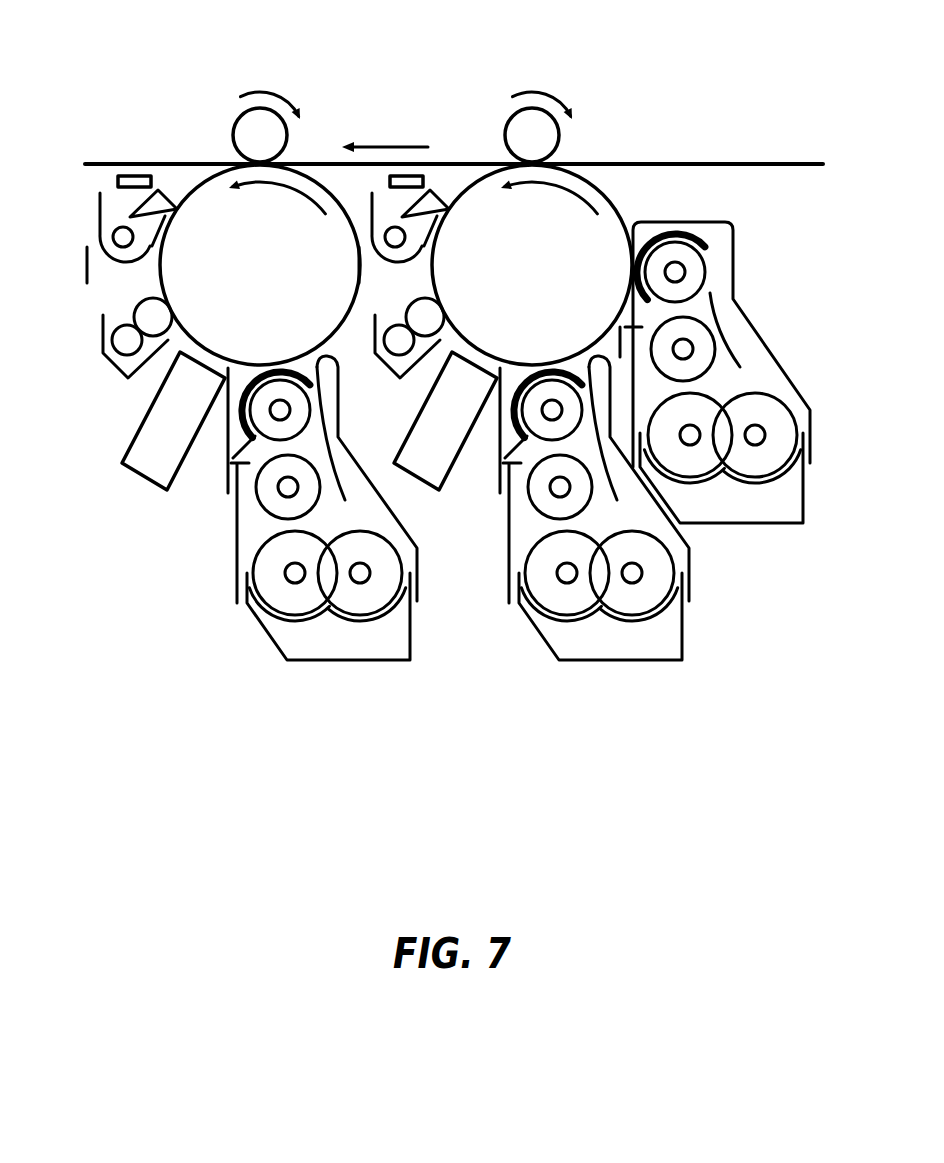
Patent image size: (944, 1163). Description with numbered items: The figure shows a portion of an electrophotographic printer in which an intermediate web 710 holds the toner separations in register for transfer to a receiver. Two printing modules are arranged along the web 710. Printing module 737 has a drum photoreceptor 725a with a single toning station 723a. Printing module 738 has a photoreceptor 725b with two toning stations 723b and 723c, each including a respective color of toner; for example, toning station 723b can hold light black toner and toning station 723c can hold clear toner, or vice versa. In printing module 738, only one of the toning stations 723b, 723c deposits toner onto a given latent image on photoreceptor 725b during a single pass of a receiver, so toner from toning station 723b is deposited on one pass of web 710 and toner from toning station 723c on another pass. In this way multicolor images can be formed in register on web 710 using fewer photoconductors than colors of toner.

The intermediate web 710 is at (687, 162).
The printing module 737 is at (172, 72).
The printing module 738 is at (495, 72).
The drum photoreceptor 725a is at (279, 279).
The photoreceptor 725b is at (551, 279).
The toning station 723a is at (252, 654).
The toning station 723b is at (580, 670).
The toning station 723c is at (772, 556).